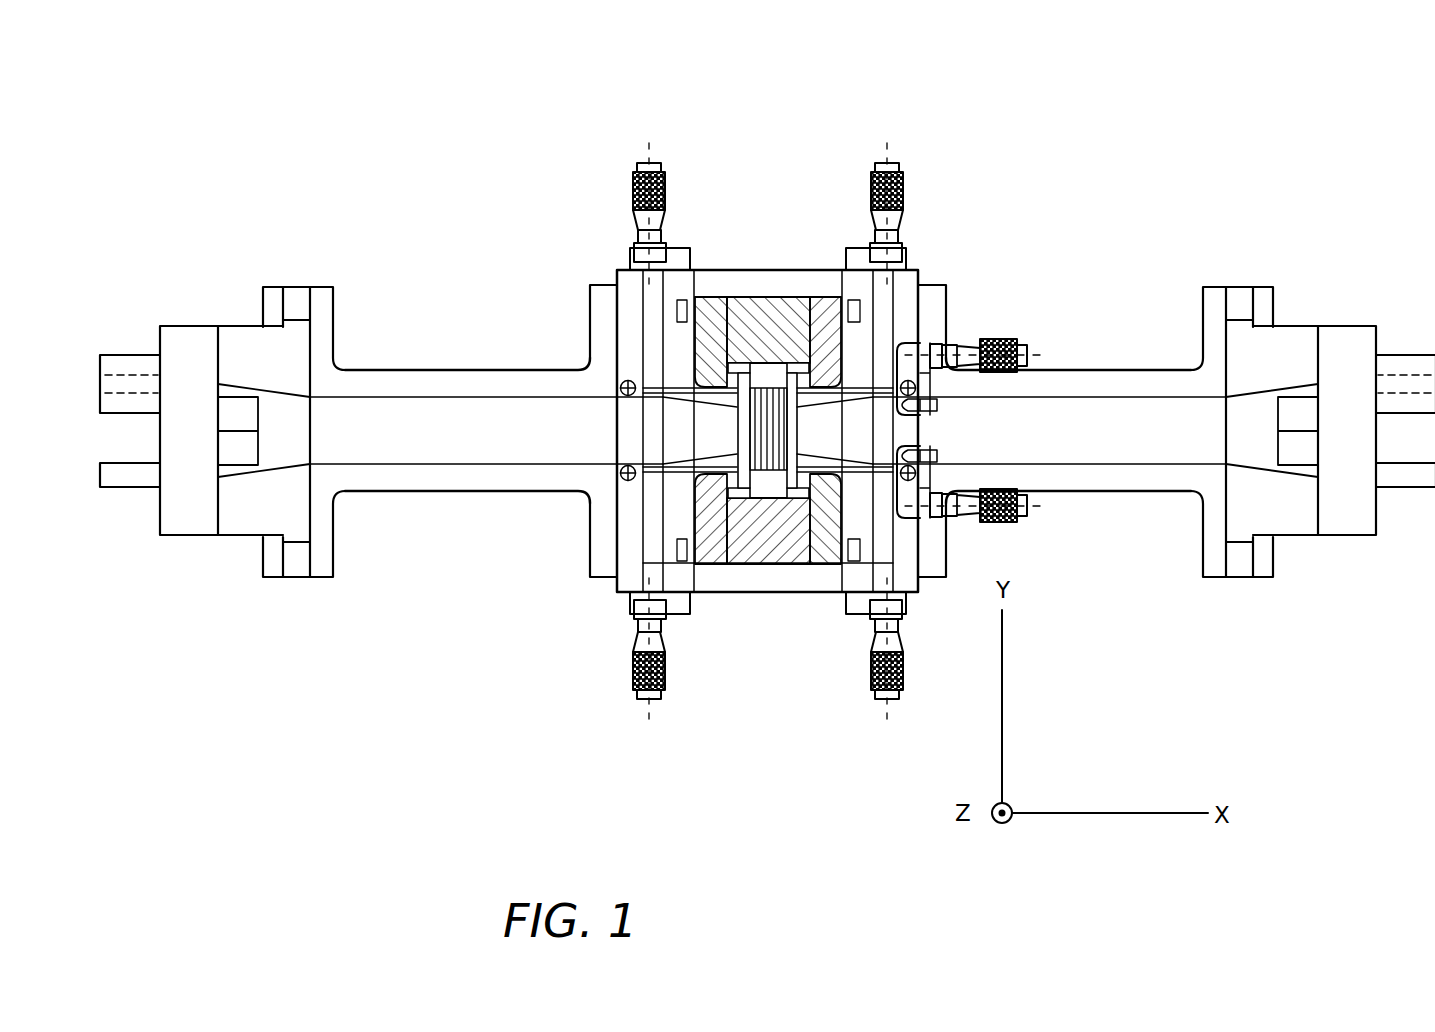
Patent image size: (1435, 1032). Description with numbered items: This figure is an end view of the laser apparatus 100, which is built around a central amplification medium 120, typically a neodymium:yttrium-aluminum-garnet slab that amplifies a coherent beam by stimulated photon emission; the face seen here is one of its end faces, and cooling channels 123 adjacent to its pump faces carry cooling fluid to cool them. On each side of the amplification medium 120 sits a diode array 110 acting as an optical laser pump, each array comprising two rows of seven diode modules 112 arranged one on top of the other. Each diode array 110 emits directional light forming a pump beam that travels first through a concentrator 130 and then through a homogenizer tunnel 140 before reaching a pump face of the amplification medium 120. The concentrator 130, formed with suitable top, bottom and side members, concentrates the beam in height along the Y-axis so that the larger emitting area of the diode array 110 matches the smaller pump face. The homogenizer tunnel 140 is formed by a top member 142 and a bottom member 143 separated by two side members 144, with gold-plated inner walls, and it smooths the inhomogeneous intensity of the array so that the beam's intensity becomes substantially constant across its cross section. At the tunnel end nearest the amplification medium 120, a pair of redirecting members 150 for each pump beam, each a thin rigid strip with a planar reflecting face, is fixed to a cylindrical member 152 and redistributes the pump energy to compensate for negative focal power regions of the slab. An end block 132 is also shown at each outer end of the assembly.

The apparatus 100 is at (748, 112).
The diode array 110 is at (268, 435).
The diode module 112 is at (226, 452).
The amplification medium 120 is at (775, 432).
The cooling channel 123 is at (770, 425).
The concentrator 130 is at (268, 396).
The end block 132 is at (232, 523).
The homogenizer tunnel 140 is at (393, 397).
The top member 142 is at (437, 372).
The bottom member 143 is at (446, 476).
The side member 144 is at (332, 432).
The redirecting member 150 is at (715, 406).
The cylindrical member 152 is at (618, 366).